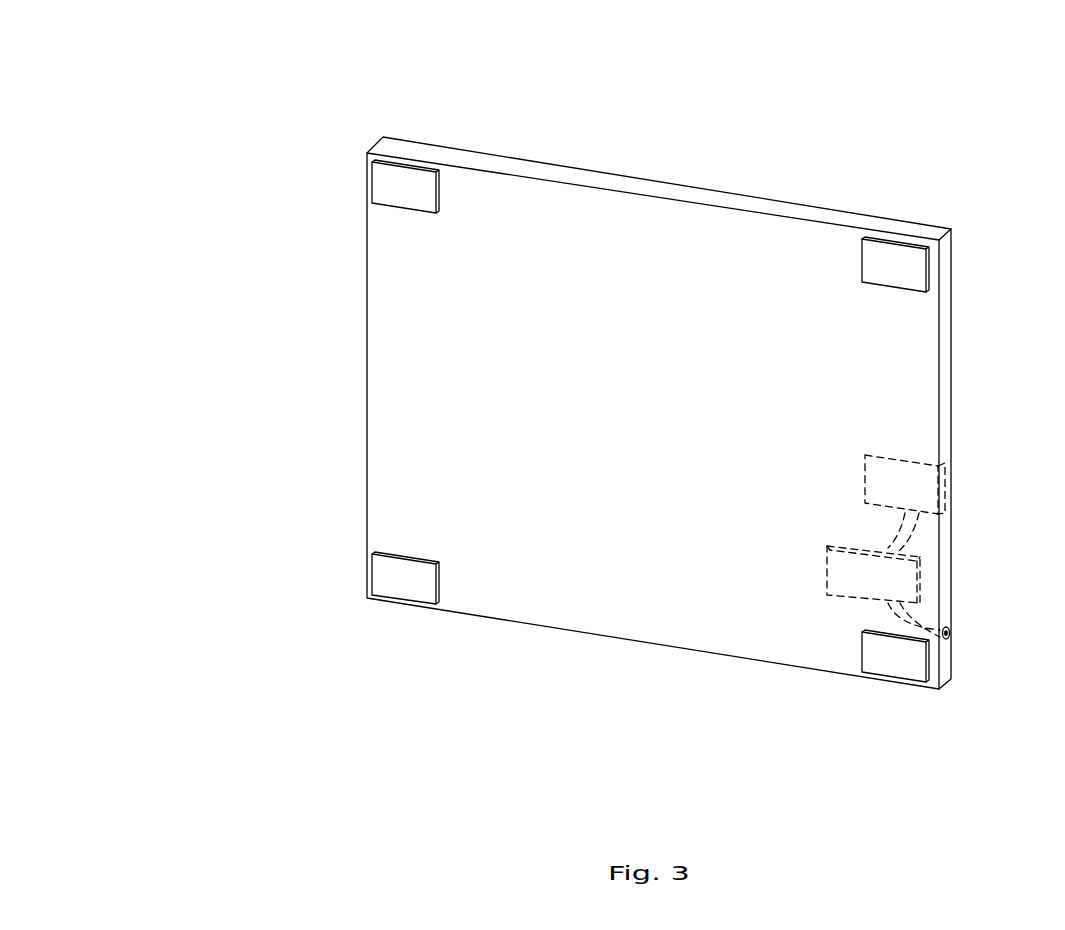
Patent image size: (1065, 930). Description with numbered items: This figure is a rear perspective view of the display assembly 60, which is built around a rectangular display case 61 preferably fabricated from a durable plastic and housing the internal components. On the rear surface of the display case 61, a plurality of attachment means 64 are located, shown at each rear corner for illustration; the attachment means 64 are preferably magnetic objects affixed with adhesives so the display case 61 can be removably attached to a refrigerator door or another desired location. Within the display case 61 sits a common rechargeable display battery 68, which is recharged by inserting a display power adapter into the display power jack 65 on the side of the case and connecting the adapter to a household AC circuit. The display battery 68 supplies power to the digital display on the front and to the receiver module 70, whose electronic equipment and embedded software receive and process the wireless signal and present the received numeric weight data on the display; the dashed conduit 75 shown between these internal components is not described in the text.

The display assembly 60 is at (146, 128).
The display case 61 is at (563, 220).
The attachment means 64 is at (379, 577).
The display power jack 65 is at (950, 638).
The display battery 68 is at (905, 583).
The receiver module 70 is at (910, 483).
The conduit 75 is at (888, 532).